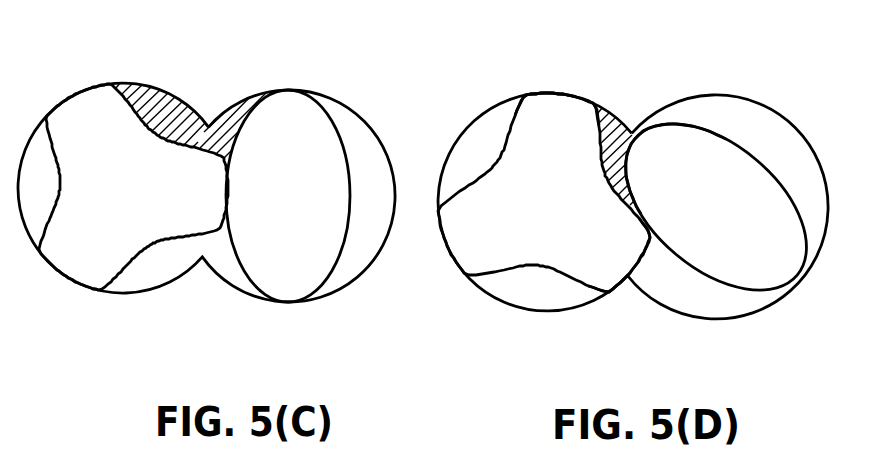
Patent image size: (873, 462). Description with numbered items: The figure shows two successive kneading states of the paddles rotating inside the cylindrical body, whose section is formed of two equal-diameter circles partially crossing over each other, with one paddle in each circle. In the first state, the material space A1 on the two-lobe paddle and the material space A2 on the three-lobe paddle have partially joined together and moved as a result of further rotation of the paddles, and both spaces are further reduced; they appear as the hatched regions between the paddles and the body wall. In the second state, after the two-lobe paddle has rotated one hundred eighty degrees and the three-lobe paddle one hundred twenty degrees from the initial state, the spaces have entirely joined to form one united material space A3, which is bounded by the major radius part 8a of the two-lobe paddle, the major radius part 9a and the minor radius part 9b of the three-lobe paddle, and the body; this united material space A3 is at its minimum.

The major radius part of the paddle 8a is at (648, 127).
The major radius part of the paddle 9a is at (557, 100).
The minor radius part of the paddle 9b is at (603, 177).
The material space A1 is at (235, 128).
The material space A2 is at (168, 102).
The united material space A3 is at (618, 112).